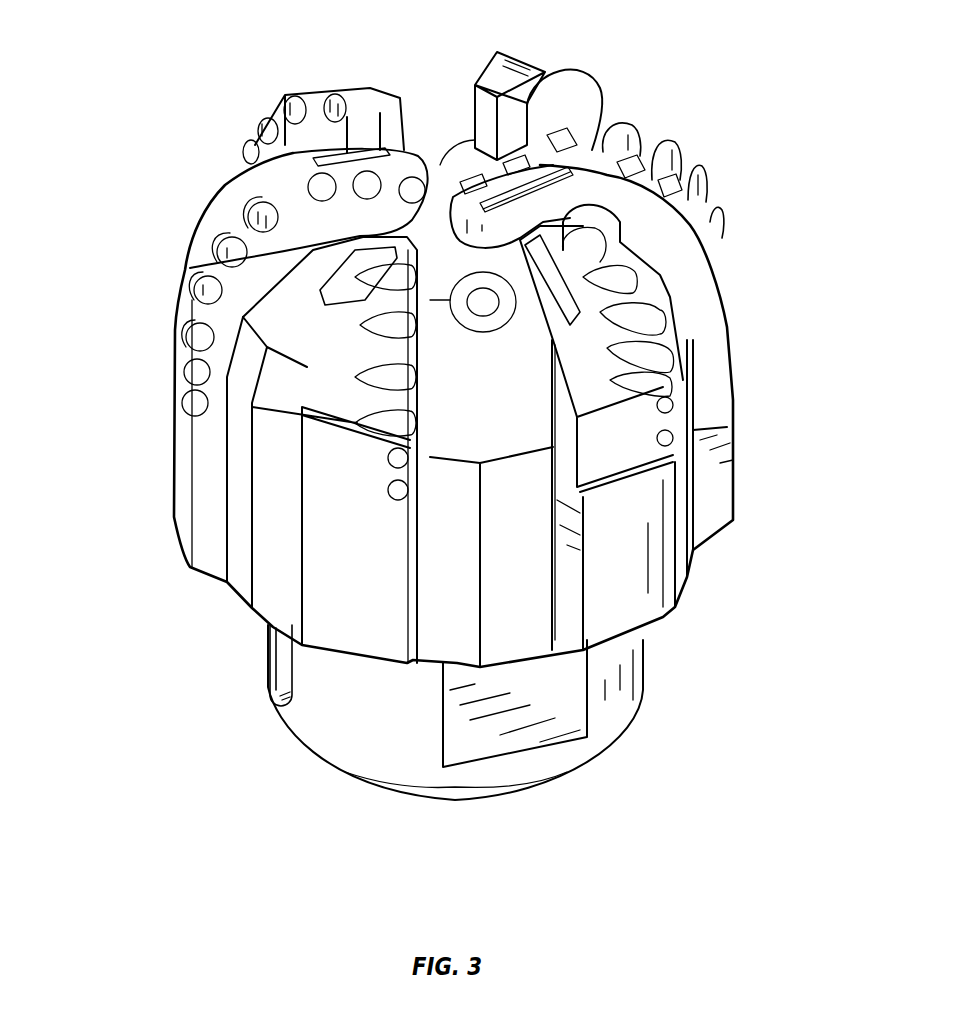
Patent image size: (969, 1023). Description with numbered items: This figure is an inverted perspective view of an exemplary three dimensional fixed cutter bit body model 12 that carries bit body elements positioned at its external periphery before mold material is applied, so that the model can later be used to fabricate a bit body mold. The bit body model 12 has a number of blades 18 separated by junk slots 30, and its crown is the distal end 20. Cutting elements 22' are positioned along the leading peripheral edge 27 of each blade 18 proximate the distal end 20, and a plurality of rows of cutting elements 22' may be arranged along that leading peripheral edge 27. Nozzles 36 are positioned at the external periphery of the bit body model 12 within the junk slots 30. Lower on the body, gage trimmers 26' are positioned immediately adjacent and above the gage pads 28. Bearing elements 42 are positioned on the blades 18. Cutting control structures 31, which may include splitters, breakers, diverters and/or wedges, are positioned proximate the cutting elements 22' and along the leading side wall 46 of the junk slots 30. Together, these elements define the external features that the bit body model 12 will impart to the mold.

The fixed cutter bit body model 12 is at (735, 391).
The blade 18 is at (637, 510).
The distal end 20 is at (435, 82).
The cutting elements 22' is at (243, 255).
The gage trimmers 26' is at (383, 448).
The leading peripheral edge 27 is at (623, 248).
The gage pads 28 is at (333, 563).
The junk slots 30 is at (497, 400).
The cutting control structures 31 is at (663, 226).
The nozzles 36 is at (583, 255).
The bearing elements 42 is at (350, 297).
The leading side wall 46 is at (700, 182).